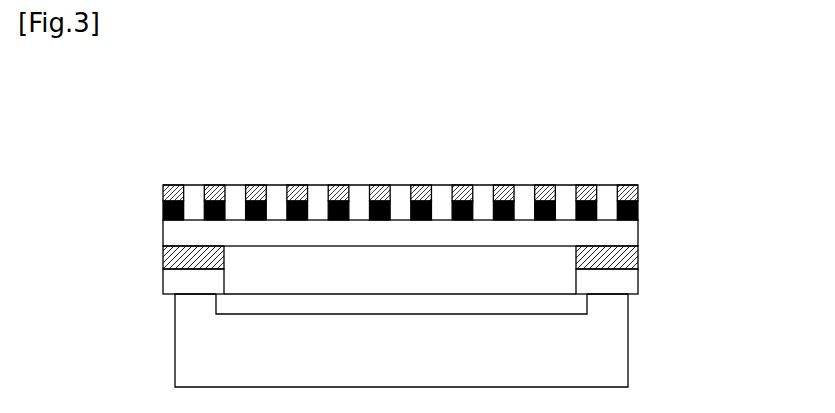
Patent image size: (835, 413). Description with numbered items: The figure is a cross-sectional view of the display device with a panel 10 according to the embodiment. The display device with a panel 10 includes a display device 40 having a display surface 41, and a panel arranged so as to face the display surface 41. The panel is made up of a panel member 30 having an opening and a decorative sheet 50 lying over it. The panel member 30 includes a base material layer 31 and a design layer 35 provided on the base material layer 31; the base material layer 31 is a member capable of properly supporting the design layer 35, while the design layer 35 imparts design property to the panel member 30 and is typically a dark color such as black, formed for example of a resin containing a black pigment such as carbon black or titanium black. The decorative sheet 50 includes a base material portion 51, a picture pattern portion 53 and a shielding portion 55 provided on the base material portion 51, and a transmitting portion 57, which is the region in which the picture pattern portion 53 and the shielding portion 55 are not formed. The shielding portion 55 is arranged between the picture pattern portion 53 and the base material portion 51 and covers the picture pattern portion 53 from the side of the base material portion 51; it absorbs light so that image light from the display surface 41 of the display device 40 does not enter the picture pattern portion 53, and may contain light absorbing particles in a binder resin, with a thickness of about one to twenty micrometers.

The display device with a panel 10 is at (248, 131).
The panel member 30 is at (485, 279).
The base material layer 31 is at (618, 283).
The design layer 35 is at (618, 257).
The display device 40 is at (605, 327).
The display surface 41 is at (462, 300).
The decorative sheet 50 is at (485, 175).
The base material portion 51 is at (608, 237).
The picture pattern portion 53 is at (638, 192).
The shielding portion 55 is at (638, 212).
The transmitting portion 57 is at (481, 202).